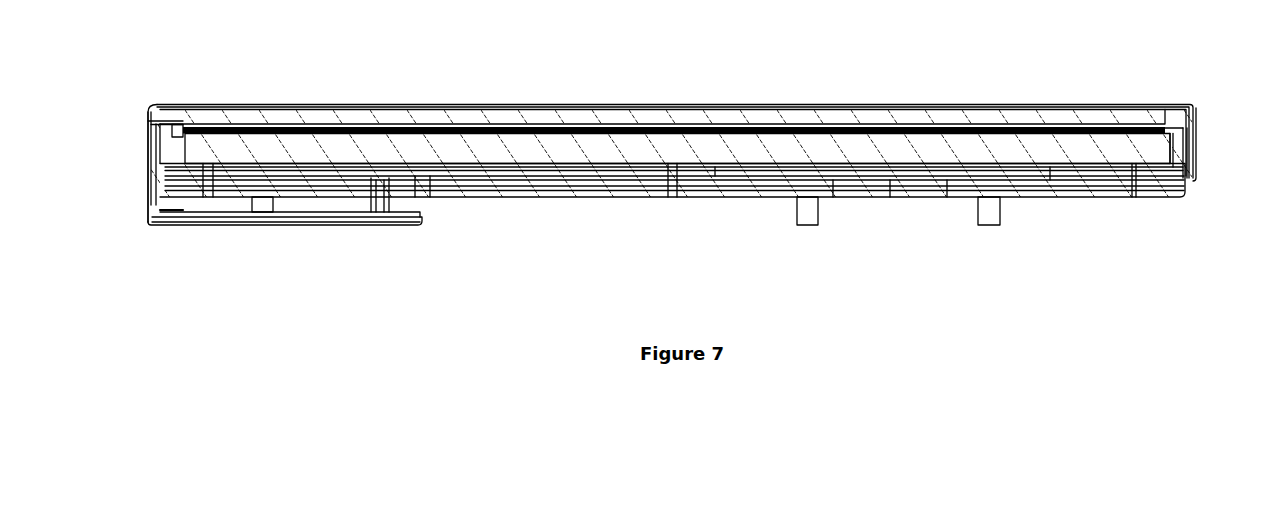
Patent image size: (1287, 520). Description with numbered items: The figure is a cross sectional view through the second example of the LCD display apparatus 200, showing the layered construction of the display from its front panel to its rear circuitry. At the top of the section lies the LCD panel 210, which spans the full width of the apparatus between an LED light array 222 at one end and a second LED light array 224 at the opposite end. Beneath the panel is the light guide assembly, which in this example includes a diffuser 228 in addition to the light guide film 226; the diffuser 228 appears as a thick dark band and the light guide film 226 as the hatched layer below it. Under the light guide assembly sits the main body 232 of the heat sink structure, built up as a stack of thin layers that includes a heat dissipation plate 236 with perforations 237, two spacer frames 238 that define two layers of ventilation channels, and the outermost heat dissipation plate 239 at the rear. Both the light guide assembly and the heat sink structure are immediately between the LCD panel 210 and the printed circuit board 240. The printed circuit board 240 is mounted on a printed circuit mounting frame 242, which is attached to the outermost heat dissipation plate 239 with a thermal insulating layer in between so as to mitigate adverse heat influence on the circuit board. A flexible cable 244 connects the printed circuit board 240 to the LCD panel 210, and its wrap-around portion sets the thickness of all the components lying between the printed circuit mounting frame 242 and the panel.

The display apparatus 200 is at (995, 68).
The LCD panel 210 is at (568, 118).
The LED light array 222 is at (170, 130).
The LED light array 224 is at (1182, 133).
The light guide film 226 is at (407, 147).
The diffuser 228 is at (293, 130).
The main body of heat sink structure 232 is at (709, 247).
The heat dissipation plate 236 is at (920, 178).
The perforations 237 is at (838, 180).
The spacer frame 238 is at (633, 172).
The outermost heat dissipation plate 239 is at (1087, 190).
The printed circuit board 240 is at (310, 212).
The printed circuit mounting frame 242 is at (372, 220).
The flexible cable 244 is at (150, 180).